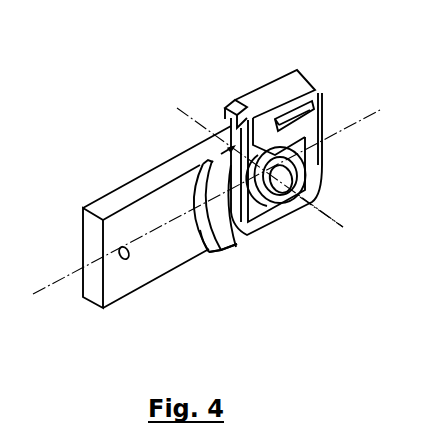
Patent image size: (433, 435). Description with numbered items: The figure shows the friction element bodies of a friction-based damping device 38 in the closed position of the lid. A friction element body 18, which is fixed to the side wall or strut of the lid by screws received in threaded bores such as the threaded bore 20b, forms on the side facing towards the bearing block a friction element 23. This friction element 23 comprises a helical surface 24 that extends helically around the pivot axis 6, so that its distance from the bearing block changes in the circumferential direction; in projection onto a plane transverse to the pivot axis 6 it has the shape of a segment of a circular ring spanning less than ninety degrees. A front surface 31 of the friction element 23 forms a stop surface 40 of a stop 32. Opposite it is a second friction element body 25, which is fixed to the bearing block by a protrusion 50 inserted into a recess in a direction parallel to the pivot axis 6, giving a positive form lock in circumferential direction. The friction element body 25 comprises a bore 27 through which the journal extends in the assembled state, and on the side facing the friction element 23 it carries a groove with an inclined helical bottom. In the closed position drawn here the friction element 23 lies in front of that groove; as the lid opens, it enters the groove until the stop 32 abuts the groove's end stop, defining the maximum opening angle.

The friction element body 18 is at (127, 181).
The threaded bore 20b is at (127, 258).
The friction element 23 is at (230, 285).
The helical surface 24 is at (222, 250).
The friction element body 25 is at (293, 70).
The bore 27 is at (280, 196).
The front surface 31 is at (195, 156).
The stop 32 is at (195, 156).
The stop surface 40 is at (210, 157).
The damping device 38 is at (273, 179).
The protrusion 50 is at (320, 98).
The pivot axis 6 is at (317, 204).